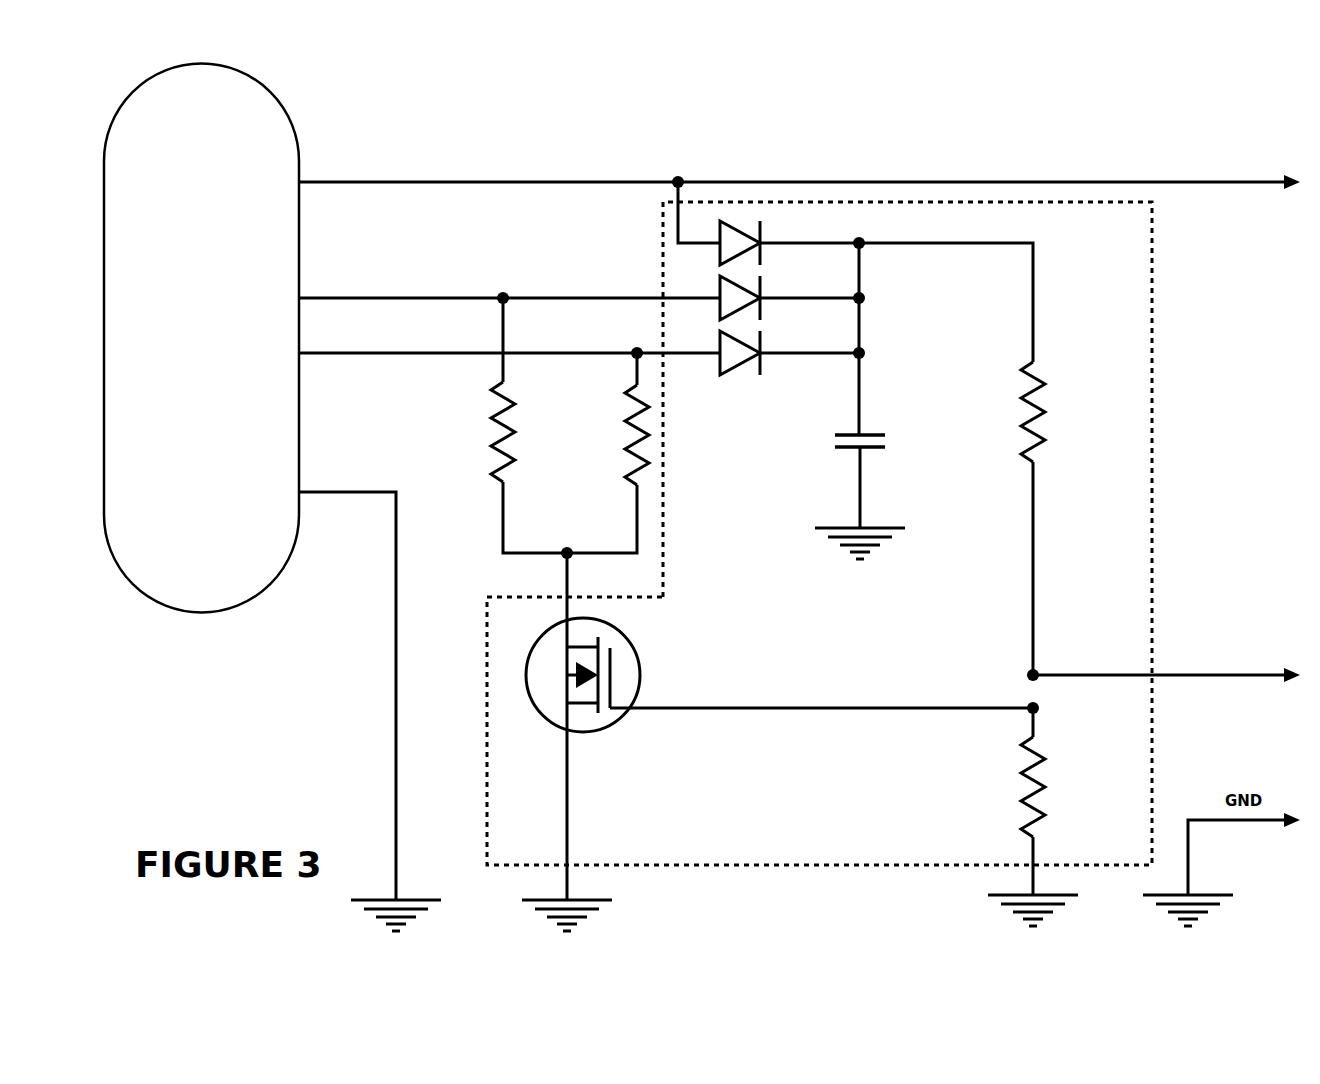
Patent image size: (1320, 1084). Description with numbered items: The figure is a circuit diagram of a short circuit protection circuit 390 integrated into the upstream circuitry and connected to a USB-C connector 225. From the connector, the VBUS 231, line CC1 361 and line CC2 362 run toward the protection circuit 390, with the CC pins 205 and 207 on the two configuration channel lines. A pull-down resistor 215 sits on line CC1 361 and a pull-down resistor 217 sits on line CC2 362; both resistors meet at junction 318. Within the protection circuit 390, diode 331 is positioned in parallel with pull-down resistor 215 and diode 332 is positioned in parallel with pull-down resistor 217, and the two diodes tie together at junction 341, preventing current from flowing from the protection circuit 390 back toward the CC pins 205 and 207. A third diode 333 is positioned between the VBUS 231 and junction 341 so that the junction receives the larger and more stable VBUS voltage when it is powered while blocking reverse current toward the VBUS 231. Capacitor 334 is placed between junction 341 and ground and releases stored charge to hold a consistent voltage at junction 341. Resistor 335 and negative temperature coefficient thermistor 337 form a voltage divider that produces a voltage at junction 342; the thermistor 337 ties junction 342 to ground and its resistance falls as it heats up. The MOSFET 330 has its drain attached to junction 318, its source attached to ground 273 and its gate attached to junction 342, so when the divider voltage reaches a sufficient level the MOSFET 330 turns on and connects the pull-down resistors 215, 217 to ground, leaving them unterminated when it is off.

The USB-C connector 225 is at (292, 120).
The VBUS 231 is at (515, 178).
The line CC1 361 is at (509, 284).
The line CC2 362 is at (509, 340).
The CC pin 205 is at (510, 294).
The CC pin 207 is at (630, 348).
The pull-down resistor 215 is at (498, 400).
The pull-down resistor 217 is at (634, 425).
The junction 318 is at (560, 558).
The MOSFET 330 is at (640, 648).
The ground 273 is at (592, 912).
The short circuit protection circuit 390 is at (1155, 270).
The third diode 333 is at (718, 230).
The diode 331 is at (718, 287).
The diode 332 is at (760, 366).
The junction 341 is at (865, 350).
The capacitor 334 is at (885, 450).
The resistor 335 is at (1050, 368).
The junction 342 is at (1109, 678).
The negative temperature coefficient thermistor 337 is at (1050, 773).